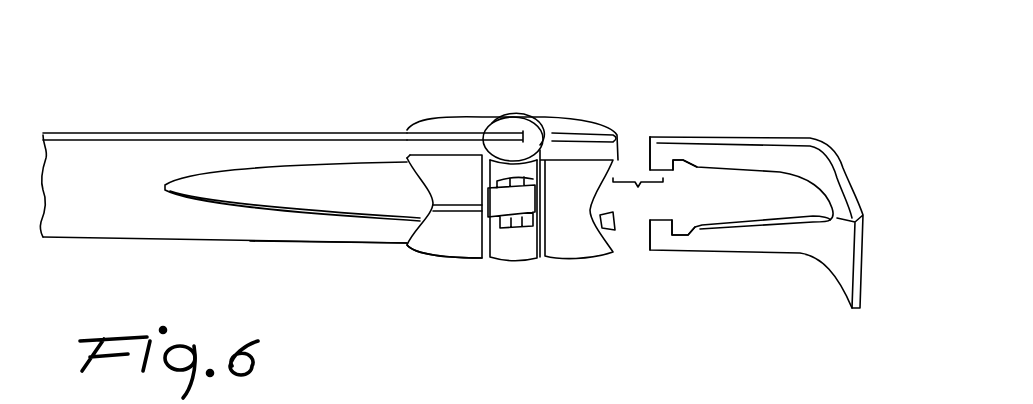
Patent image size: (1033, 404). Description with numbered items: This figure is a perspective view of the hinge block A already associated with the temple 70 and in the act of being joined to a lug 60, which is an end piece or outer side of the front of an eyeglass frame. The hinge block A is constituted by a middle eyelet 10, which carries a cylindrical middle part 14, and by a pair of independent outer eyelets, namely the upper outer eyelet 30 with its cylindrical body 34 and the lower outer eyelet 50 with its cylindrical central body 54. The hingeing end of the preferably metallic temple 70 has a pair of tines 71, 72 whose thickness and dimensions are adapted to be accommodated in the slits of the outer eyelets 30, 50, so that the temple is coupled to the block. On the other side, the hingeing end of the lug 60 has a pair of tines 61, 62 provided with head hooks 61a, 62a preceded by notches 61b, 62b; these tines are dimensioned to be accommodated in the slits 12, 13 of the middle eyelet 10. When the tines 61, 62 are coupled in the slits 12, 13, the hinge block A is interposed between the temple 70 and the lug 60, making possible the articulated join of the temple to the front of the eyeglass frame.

The middle eyelet 10 is at (572, 183).
The slit 12 is at (638, 160).
The slit 13 is at (617, 228).
The cylindrical middle part 14 is at (520, 210).
The independent eyelet 30 is at (450, 180).
The cylindrical body 34 is at (510, 127).
The lower outer eyelet 50 is at (458, 238).
The cylindrical central body 54 is at (513, 245).
The lug 60 is at (747, 198).
The tine 61 is at (756, 167).
The head hook 61a is at (662, 162).
The notch 61b is at (683, 165).
The tine 62 is at (742, 288).
The head hook 62a is at (660, 230).
The notch 62b is at (683, 227).
The temple 70 is at (112, 170).
The tine 71 is at (290, 157).
The tine 72 is at (265, 222).
The hinge block A is at (552, 105).